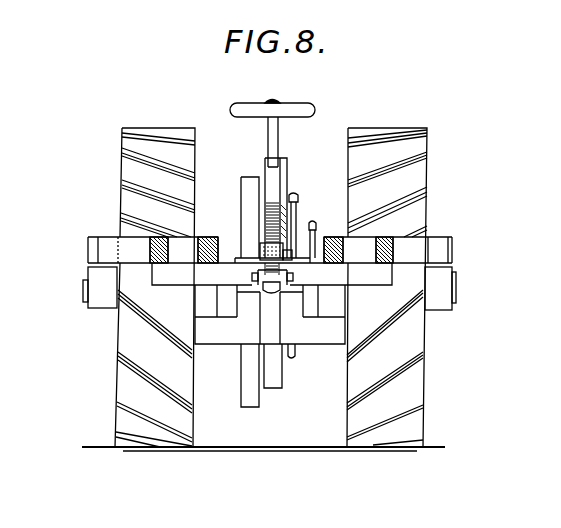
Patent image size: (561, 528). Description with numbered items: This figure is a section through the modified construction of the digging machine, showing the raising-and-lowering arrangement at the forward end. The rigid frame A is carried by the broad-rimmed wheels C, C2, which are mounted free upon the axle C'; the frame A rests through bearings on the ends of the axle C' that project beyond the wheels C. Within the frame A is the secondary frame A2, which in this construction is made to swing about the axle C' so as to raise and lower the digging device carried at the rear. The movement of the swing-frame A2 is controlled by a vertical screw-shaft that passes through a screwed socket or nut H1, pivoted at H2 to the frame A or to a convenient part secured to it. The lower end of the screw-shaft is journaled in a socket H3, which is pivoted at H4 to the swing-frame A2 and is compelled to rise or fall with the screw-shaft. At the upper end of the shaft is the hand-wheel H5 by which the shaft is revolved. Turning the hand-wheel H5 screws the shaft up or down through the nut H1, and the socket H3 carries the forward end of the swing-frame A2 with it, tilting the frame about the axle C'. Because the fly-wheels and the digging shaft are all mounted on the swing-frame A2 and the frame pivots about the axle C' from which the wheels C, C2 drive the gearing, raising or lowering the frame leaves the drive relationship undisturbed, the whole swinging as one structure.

The broad-rimmed wheels C is at (155, 268).
The wheel C2 is at (393, 150).
The axle C' is at (252, 304).
The rigid frame A is at (183, 265).
The secondary frame A2 is at (252, 333).
The screwed socket or nut H1 is at (274, 208).
The pivot H2 is at (284, 247).
The socket H3 is at (255, 250).
The pivot H4 is at (280, 276).
The hand-wheel H5 is at (315, 111).